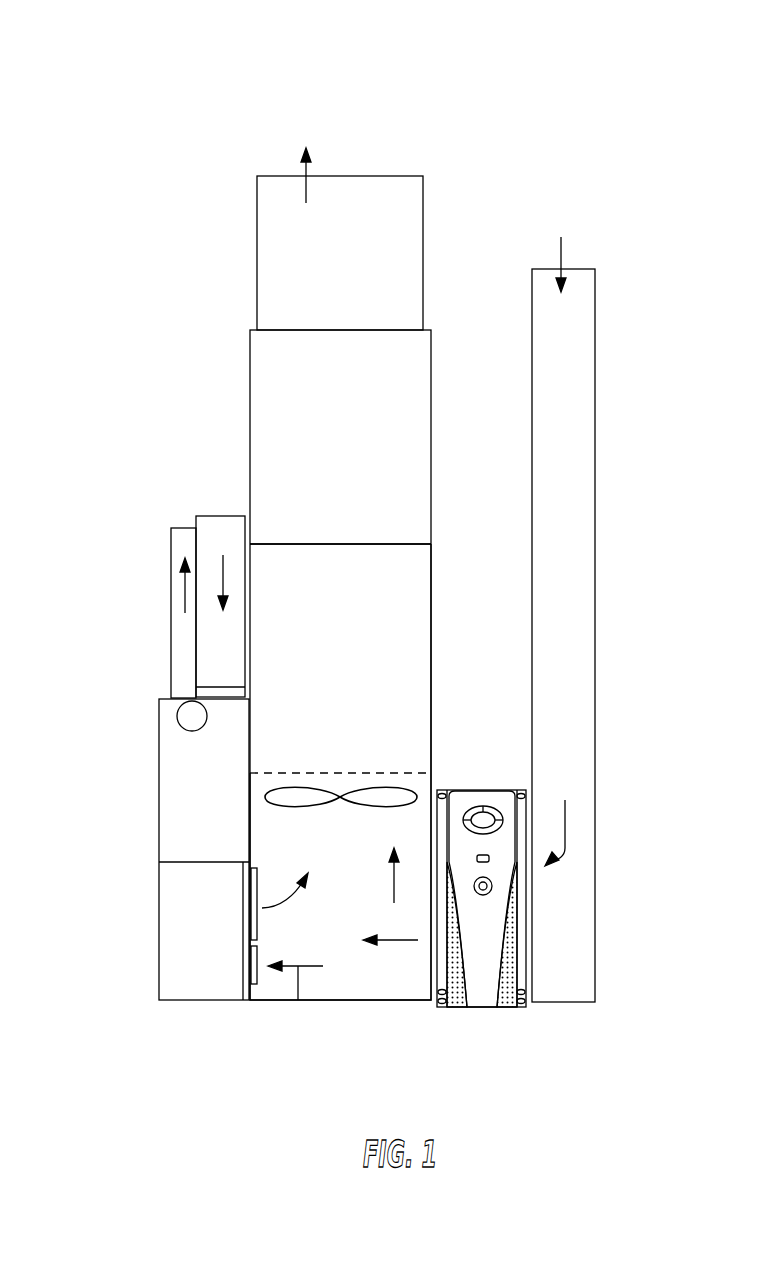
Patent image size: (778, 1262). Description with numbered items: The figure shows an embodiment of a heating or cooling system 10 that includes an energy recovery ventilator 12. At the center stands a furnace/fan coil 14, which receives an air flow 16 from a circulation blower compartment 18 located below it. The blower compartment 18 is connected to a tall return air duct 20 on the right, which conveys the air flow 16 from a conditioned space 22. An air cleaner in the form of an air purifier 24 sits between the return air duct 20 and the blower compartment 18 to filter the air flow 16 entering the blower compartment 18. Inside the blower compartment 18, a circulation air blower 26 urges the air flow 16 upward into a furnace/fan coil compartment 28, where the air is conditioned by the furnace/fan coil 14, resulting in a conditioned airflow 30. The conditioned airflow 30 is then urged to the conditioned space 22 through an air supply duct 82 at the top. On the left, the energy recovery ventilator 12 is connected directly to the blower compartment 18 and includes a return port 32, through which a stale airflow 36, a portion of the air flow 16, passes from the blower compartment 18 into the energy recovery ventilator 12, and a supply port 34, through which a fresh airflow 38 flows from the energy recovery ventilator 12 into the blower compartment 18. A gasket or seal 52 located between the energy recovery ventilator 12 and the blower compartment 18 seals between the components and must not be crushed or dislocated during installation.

The heating or cooling system 10 is at (118, 84).
The energy recovery ventilator 12 is at (159, 797).
The furnace/fan coil 14 is at (354, 679).
The air flow 16 is at (562, 252).
The circulation blower compartment 18 is at (350, 909).
The return air duct 20 is at (578, 452).
The conditioned space 22 is at (474, 139).
The air purifier 24 is at (483, 983).
The circulation air blower 26 is at (315, 788).
The furnace/fan coil compartment 28 is at (418, 592).
The conditioned airflow 30 is at (302, 168).
The return port 32 is at (250, 972).
The supply port 34 is at (250, 925).
The stale airflow 36 is at (298, 1000).
The fresh airflow 38 is at (277, 903).
The gasket or seal 52 is at (232, 993).
The air supply duct 82 is at (405, 282).